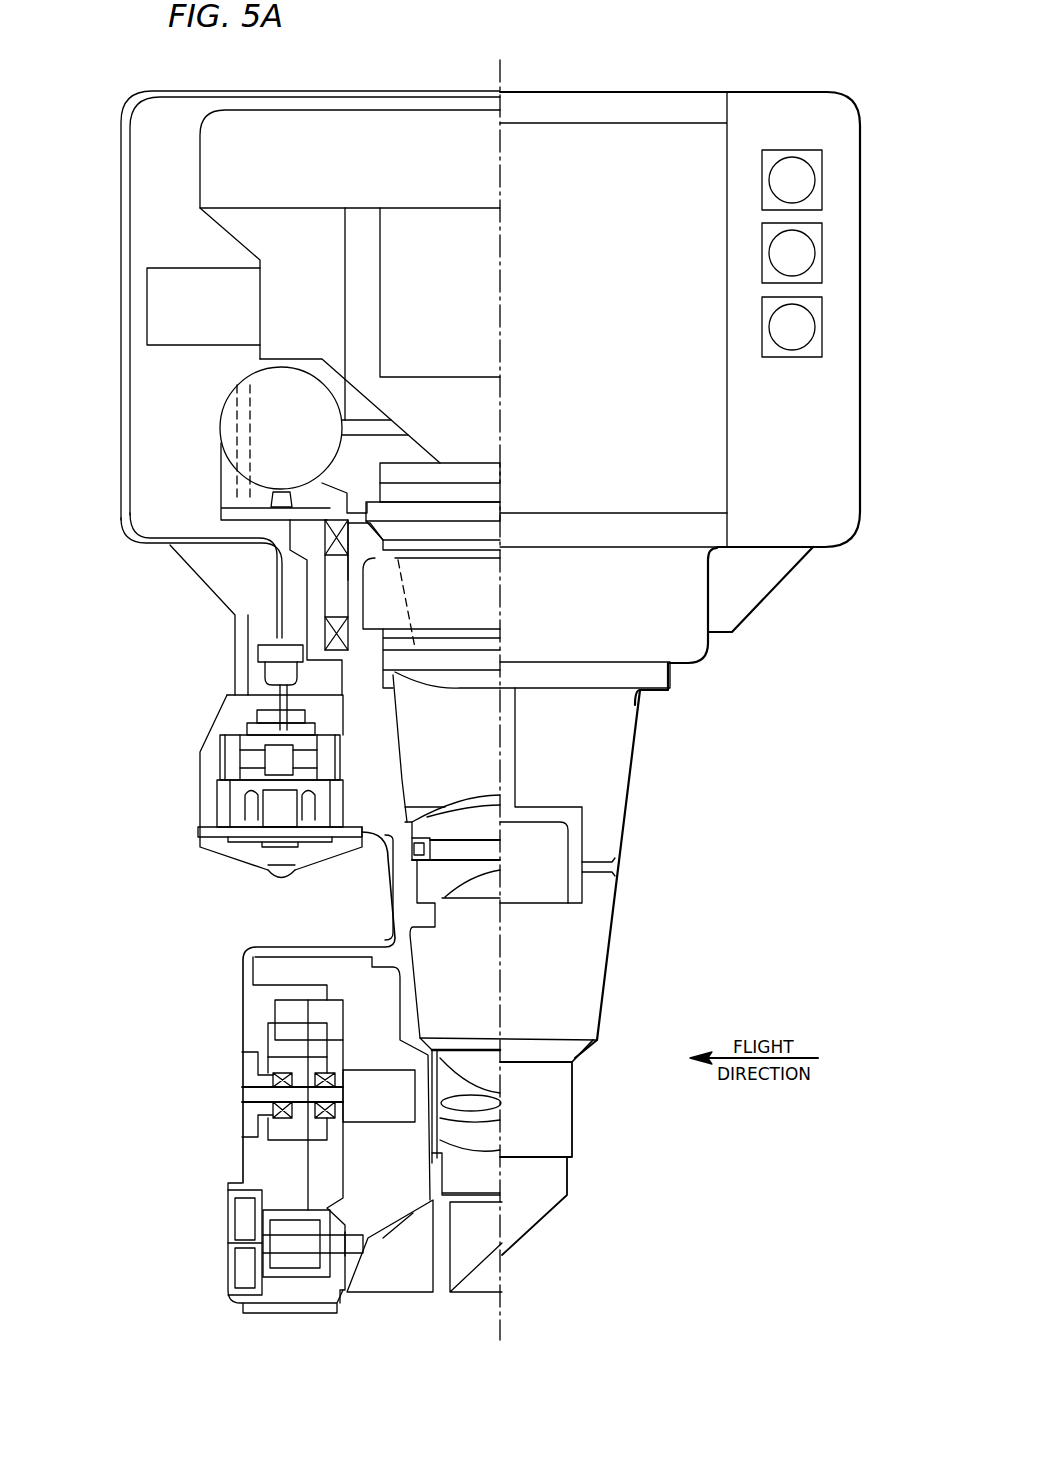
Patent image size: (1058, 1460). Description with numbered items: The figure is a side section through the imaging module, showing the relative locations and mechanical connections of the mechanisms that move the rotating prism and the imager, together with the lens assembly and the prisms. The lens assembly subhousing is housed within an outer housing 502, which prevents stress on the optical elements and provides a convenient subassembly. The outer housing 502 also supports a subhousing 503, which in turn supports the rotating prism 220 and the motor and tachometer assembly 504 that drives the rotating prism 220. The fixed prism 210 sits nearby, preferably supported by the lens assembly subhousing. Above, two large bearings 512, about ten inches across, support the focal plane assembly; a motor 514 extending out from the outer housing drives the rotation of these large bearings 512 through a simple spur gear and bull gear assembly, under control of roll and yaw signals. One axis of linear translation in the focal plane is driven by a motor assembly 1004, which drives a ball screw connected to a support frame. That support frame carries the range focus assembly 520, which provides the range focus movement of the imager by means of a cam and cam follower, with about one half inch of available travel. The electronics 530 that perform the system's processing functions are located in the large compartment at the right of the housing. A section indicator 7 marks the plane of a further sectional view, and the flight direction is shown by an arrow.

The range focus assembly 520 is at (378, 140).
The electronics 530 is at (627, 160).
The motor assembly 1004 is at (221, 410).
The large bearings 512 is at (325, 628).
The motor 514 is at (210, 740).
The outer housing 502 is at (388, 880).
The subhousing 503 is at (252, 1010).
The motor (and tachometer) assembly 504 is at (242, 1120).
The rotating prism 220 is at (397, 1263).
The fixed prism 210 is at (472, 1242).
The section line 7- 7 is at (152, 427).